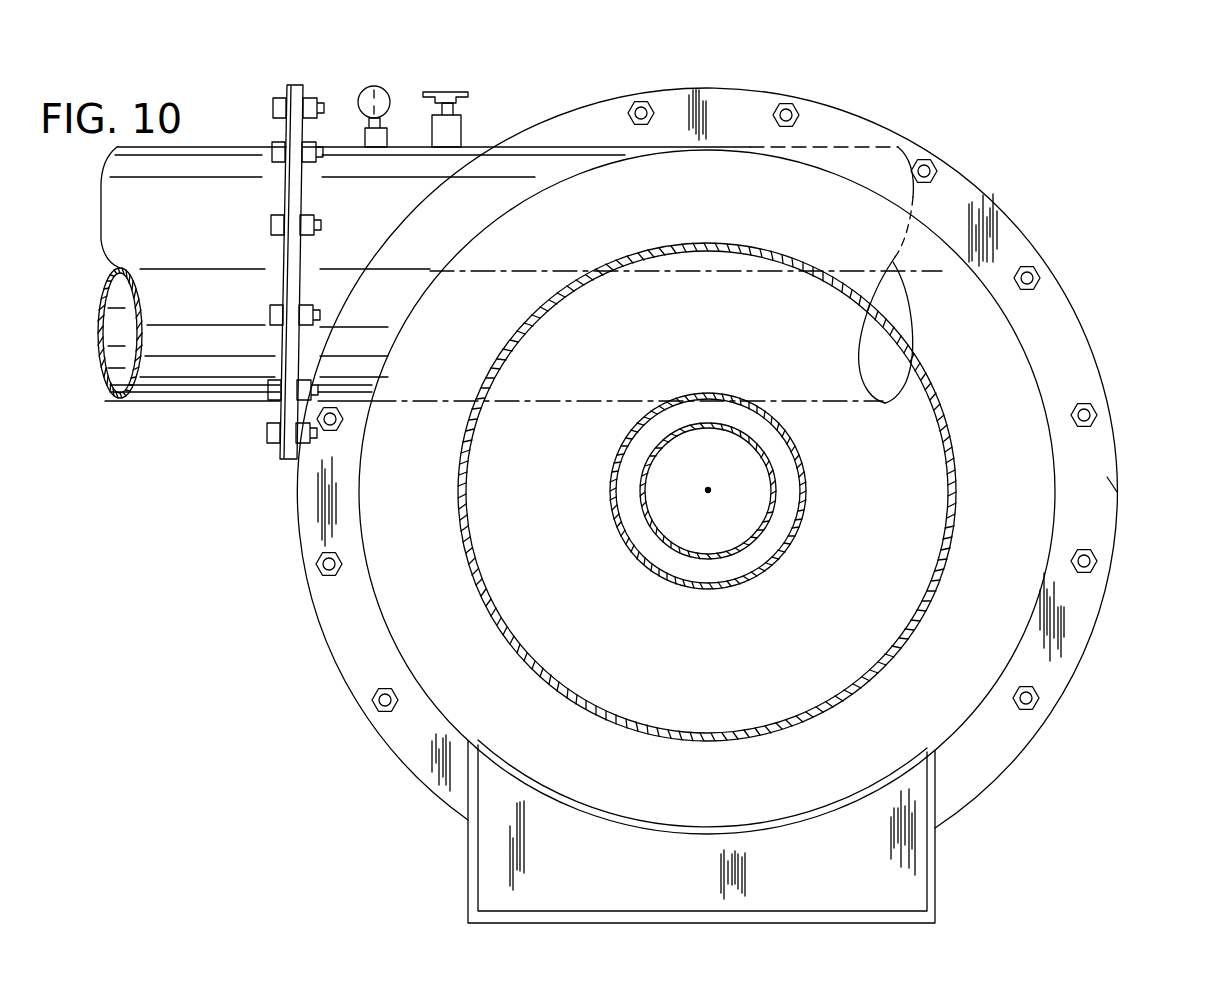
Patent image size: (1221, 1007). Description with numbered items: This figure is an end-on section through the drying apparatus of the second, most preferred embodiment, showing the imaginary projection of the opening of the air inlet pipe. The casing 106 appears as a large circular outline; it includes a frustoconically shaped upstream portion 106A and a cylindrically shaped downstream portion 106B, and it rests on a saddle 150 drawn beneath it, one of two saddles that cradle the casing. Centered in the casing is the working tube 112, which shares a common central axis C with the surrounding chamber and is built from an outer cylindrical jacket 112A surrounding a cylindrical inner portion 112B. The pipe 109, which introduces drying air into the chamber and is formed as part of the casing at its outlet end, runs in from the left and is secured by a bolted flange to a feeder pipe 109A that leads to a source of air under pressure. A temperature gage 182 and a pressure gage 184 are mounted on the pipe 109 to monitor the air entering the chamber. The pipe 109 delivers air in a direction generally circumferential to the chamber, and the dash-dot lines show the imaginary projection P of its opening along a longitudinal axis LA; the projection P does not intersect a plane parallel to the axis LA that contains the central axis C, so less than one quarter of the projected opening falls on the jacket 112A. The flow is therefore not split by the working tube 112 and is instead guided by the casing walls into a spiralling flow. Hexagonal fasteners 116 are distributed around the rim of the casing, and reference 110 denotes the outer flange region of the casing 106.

The casing 106 is at (1122, 418).
The upstream portion of the casing 106A is at (1027, 402).
The downstream portion of the casing 106B is at (1015, 327).
The pipe 109 is at (568, 147).
The feeder pipe 109A is at (165, 400).
The housing flange 110 is at (1107, 477).
The working tube 112 is at (765, 517).
The outer cylindrical jacket 112A is at (779, 560).
The inner portion of the working tube 112B is at (680, 548).
The bolts 116 is at (1097, 565).
The saddles 150 is at (937, 873).
The temperature gage 182 is at (470, 95).
The pressure gage 184 is at (382, 86).
The central axis C is at (708, 490).
The longitudinal axis LA is at (535, 271).
The imaginary projection P is at (513, 402).